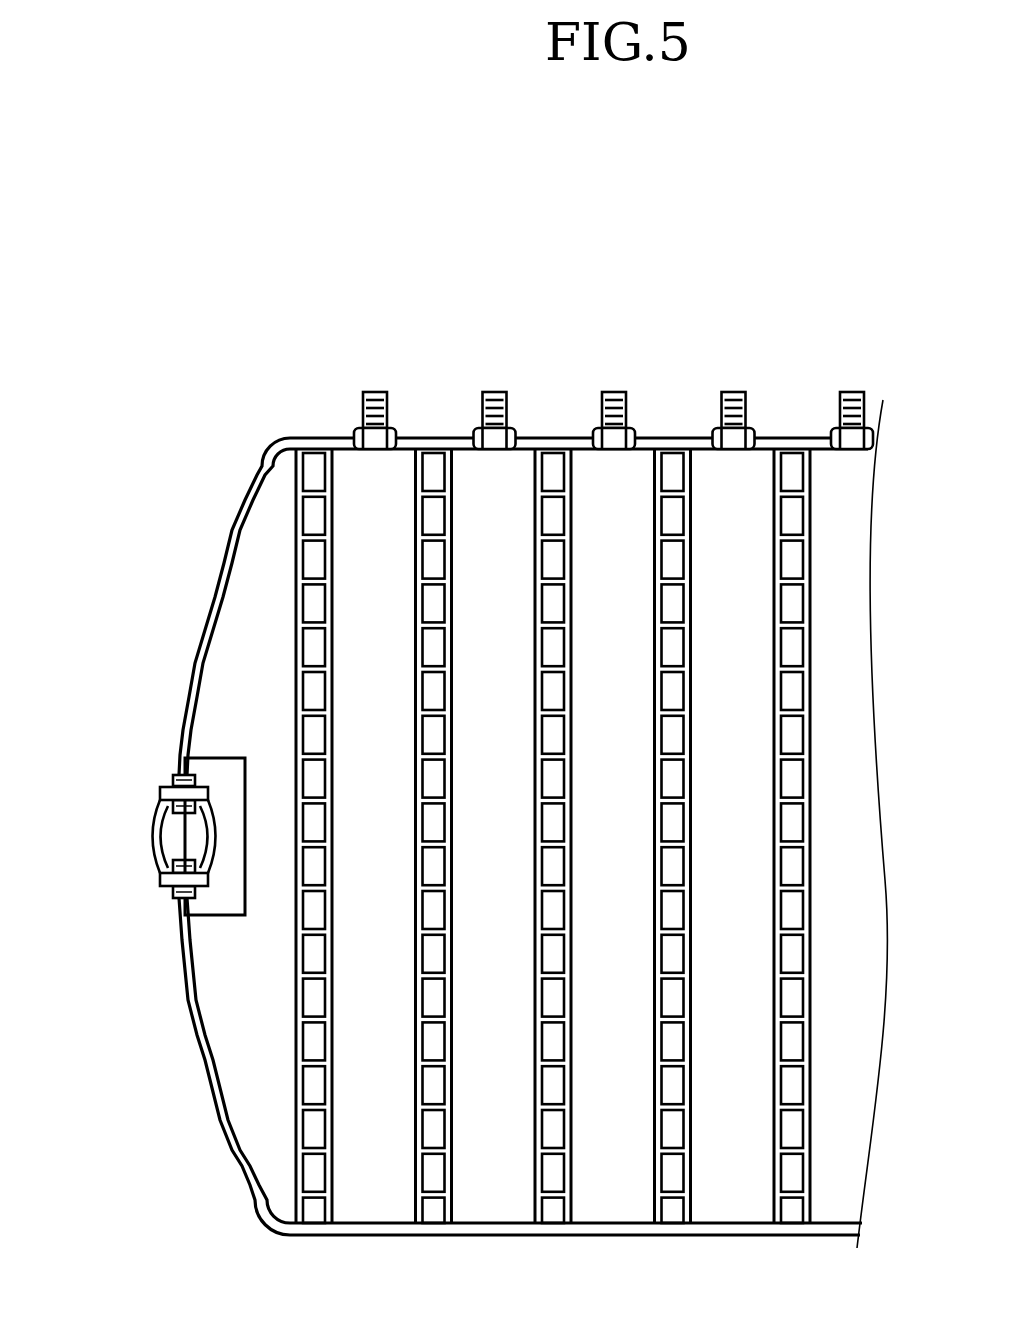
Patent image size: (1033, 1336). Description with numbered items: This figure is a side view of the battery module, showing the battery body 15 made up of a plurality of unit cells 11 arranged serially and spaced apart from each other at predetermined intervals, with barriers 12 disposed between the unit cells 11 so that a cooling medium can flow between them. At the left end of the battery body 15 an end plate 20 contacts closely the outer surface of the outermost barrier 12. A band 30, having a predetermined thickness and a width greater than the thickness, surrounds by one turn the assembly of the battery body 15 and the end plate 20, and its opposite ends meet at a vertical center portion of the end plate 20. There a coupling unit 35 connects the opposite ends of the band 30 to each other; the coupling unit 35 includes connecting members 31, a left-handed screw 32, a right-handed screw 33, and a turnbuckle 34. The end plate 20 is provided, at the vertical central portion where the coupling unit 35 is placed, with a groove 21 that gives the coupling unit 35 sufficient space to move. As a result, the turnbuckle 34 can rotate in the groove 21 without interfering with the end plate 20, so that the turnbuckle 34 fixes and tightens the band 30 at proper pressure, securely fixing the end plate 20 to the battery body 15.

The unit cell 11 is at (384, 523).
The barrier 12 is at (431, 450).
The battery body 15 is at (588, 747).
The end plate 20 is at (168, 836).
The groove 21 is at (215, 917).
The band 30 is at (200, 620).
The connecting member 31 is at (174, 782).
The left-handed screw 32 is at (159, 802).
The right-handed screw 33 is at (159, 874).
The turnbuckle 34 is at (148, 834).
The coupling unit 35 is at (131, 816).